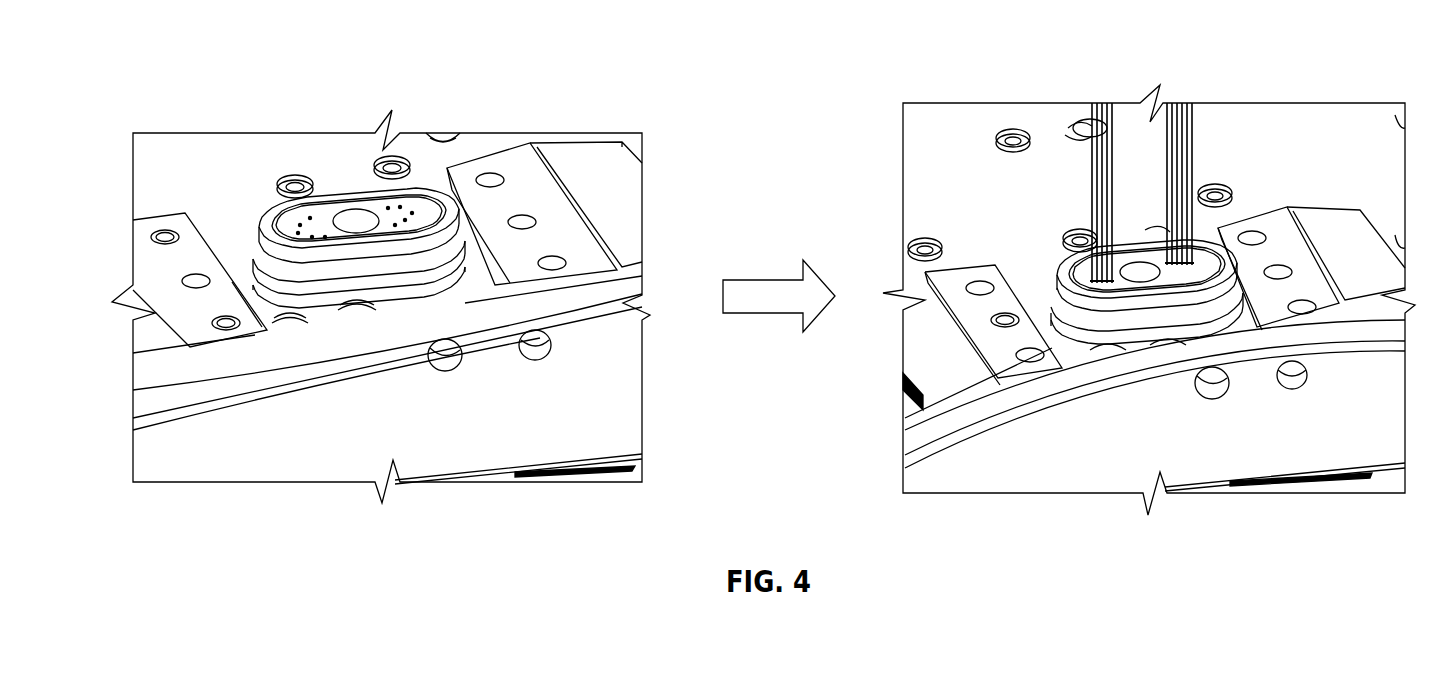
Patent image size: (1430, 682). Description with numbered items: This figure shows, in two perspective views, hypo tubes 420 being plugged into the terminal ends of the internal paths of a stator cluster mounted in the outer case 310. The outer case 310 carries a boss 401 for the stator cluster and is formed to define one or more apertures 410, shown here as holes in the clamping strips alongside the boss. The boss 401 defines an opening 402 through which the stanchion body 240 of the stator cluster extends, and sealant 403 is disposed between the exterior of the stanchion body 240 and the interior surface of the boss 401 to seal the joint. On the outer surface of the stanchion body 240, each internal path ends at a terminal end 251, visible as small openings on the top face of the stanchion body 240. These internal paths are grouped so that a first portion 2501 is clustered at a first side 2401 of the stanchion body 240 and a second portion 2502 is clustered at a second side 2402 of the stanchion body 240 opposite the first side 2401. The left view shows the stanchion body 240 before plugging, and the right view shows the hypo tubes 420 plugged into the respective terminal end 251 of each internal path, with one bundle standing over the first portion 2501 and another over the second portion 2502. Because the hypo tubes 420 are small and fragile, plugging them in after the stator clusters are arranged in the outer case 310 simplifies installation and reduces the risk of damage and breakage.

The outer case 310 is at (162, 160).
The apertures 410 is at (163, 237).
The opening 402 is at (395, 190).
The bosses 401 is at (435, 203).
The sealant 403 is at (346, 240).
The stanchion body 240 is at (388, 232).
The terminal end 251 is at (300, 212).
The hypo tubes 420 is at (1090, 140).
The first portion of the internal paths 2501 is at (1128, 96).
The second portion of the internal paths 2502 is at (1215, 96).
The first side of the stanchion body 2401 is at (1062, 280).
The second side of the stanchion body 2402 is at (1195, 285).